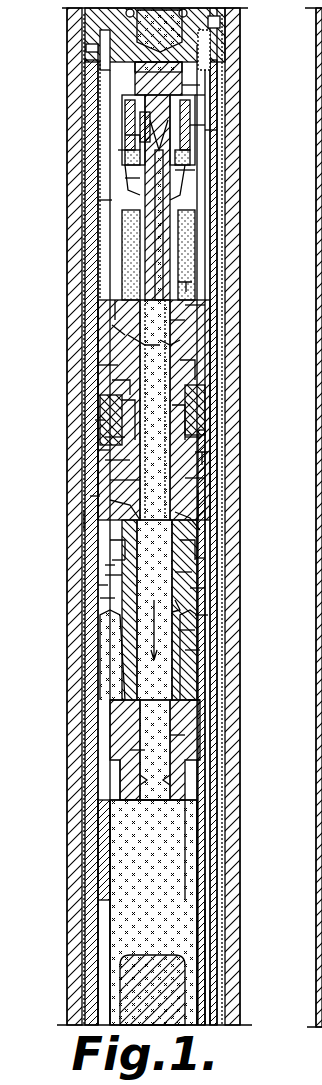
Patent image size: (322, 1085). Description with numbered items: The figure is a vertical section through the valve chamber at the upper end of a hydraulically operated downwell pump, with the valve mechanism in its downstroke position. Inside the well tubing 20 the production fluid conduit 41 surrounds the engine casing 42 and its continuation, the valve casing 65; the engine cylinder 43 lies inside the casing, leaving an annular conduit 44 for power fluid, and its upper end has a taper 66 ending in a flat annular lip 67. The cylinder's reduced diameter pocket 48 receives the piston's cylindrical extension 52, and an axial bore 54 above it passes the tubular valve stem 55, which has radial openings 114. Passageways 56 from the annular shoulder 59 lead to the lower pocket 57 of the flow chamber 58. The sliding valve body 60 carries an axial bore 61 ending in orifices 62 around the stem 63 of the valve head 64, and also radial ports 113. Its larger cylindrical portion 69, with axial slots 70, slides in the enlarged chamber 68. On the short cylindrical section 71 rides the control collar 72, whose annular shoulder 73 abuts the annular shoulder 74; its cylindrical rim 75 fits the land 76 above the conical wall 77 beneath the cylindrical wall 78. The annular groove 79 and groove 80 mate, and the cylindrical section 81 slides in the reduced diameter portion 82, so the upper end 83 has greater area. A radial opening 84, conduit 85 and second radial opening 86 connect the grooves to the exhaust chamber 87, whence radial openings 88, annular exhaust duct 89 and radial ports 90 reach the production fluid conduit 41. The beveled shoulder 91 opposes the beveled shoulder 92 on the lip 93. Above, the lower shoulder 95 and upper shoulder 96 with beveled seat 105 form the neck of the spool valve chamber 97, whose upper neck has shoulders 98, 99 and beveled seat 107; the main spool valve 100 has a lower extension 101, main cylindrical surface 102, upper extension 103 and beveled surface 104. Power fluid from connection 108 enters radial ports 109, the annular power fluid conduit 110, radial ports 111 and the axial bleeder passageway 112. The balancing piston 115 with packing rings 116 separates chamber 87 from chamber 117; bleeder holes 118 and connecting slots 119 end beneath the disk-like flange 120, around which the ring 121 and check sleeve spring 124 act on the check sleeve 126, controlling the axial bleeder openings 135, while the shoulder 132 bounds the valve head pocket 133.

The well tubing 20 is at (236, 905).
The production fluid conduit 41 is at (74, 27).
The engine casing 42 is at (210, 957).
The engine cylinder 43 is at (100, 935).
The annular conduit 44 is at (207, 1012).
The reduced diameter pocket 48 is at (172, 822).
The cylindrical extension 52 is at (160, 990).
The axial bore 54 is at (180, 740).
The tubular valve stem 55 is at (145, 755).
The longitudinally extending passageways 56 is at (195, 845).
The lower pocket 57 is at (130, 690).
The flow chamber 58 is at (185, 575).
The annular shoulder 59 is at (110, 895).
The sliding valve body 60 is at (180, 602).
The axial bore 61 is at (130, 790).
The orifices 62 is at (178, 108).
The stem of valve head 63 is at (122, 108).
The valve head 64 is at (185, 80).
The valve casing 65 is at (112, 503).
The taper 66 is at (190, 655).
The flat annular lip 67 is at (115, 623).
The enlarged chamber 68 is at (180, 635).
The larger cylindrical portion 69 is at (105, 601).
The axial slots 70 is at (195, 618).
The short cylindrical section 71 is at (110, 578).
The control collar 72 is at (190, 545).
The annular shoulder 73 is at (115, 561).
The annular shoulder 74 is at (190, 590).
The cylindrical rim 75 is at (120, 545).
The land 76 is at (195, 560).
The conical wall 77 is at (100, 590).
The cylindrical wall 78 is at (110, 567).
The annular groove 79 is at (85, 520).
The groove 80 is at (205, 500).
The cylindrical section 81 is at (120, 480).
The reduced diameter portion 82 is at (195, 482).
The upper end of collar 83 is at (105, 460).
The radial opening 84 is at (185, 515).
The conduit 85 is at (95, 496).
The second radial opening 86 is at (190, 262).
The exhaust chamber 87 is at (130, 255).
The radial openings 88 is at (192, 282).
The annular exhaust duct 89 is at (100, 205).
The radial ports 90 is at (90, 50).
The beveled shoulder 91 is at (100, 450).
The beveled shoulder 92 is at (190, 437).
The lip 93 is at (105, 437).
The lower shoulder 95 is at (110, 413).
The upper shoulder 96 is at (195, 392).
The spool valve chamber 97 is at (110, 365).
The upper shoulder 98 is at (175, 325).
The upper shoulder 99 is at (125, 310).
The main spool valve 100 is at (170, 345).
The lower extension 101 is at (120, 385).
The main cylindrical surface 102 is at (185, 367).
The upper extension 103 is at (118, 330).
The beveled surface 104 is at (185, 415).
The beveled seat 105 is at (110, 402).
The beveled seat 107 is at (190, 308).
The power fluid connection 108 is at (159, 31).
The radial ports 109 is at (222, 22).
The annular power fluid conduit 110 is at (128, 163).
The radial ports 111 is at (95, 426).
The axial bleeder passageway 112 is at (200, 456).
The radial ports 113 is at (145, 345).
The radial openings 114 is at (175, 785).
The balancing piston 115 is at (125, 186).
The packing rings 116 is at (185, 170).
The chamber 117 is at (140, 118).
The bleeder holes 118 is at (188, 195).
The connecting slots 119 is at (130, 178).
The disk-like flange 120 is at (210, 135).
The ring 121 is at (125, 135).
The check sleeve spring 124 is at (190, 125).
The check sleeve 126 is at (197, 95).
The shoulder 132 is at (186, 86).
The valve head pocket 133 is at (100, 70).
The axial bleeder openings 135 is at (118, 150).